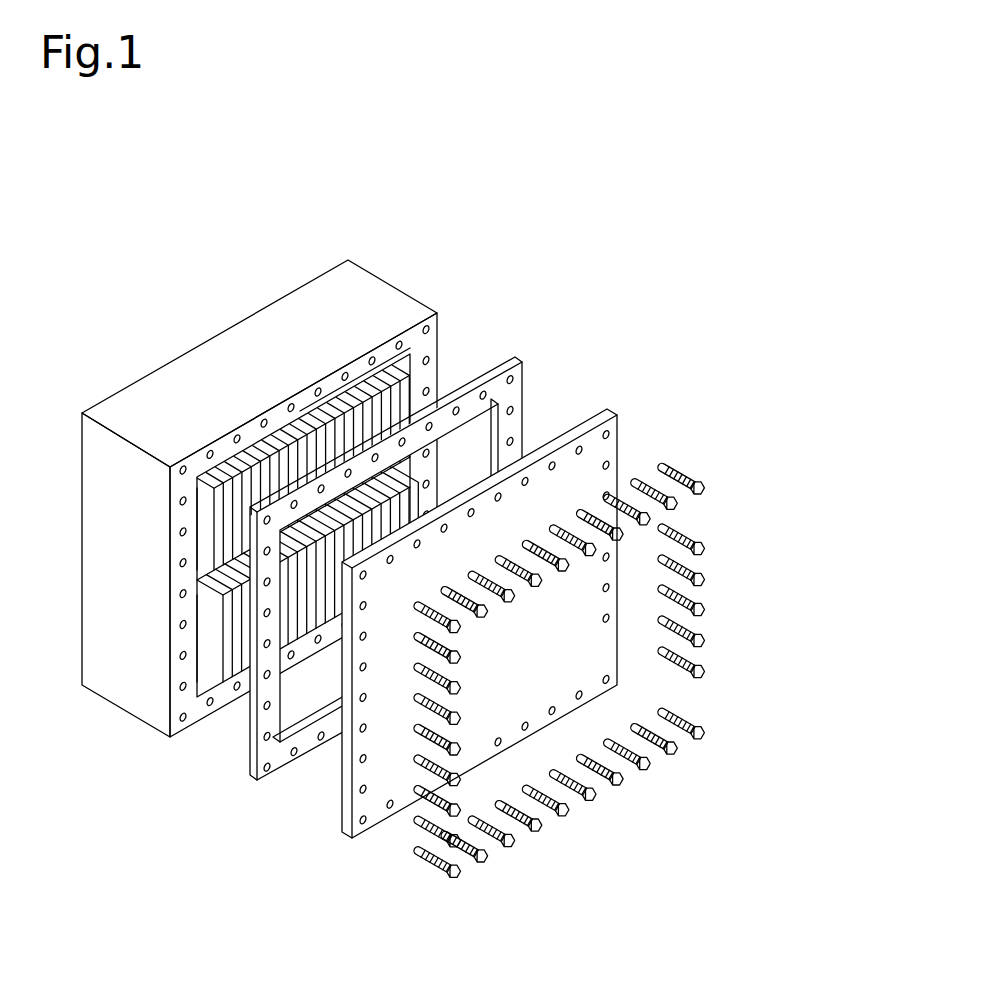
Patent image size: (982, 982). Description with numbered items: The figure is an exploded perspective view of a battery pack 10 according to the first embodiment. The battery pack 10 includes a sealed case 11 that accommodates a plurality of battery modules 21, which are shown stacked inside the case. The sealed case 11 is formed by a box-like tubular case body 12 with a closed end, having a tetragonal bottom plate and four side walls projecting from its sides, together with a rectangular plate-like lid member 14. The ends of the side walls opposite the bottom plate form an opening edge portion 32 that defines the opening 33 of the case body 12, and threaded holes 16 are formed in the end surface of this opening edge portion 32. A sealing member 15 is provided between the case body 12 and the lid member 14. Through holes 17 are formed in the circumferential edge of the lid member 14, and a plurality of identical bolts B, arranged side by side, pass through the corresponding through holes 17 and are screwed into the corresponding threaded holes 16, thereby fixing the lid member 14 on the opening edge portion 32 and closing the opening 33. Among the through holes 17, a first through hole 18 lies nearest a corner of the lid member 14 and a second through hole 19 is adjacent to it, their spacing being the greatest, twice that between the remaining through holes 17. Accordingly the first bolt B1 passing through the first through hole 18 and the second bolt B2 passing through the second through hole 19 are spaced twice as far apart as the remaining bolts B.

The battery pack 10 is at (732, 321).
The sealed case 11 is at (237, 857).
The case body 12 is at (123, 723).
The lid member 14 is at (340, 810).
The sealing member 15 is at (527, 370).
The threaded holes 16 is at (266, 420).
The through holes 17 is at (611, 466).
The first through hole 18 is at (604, 680).
The second through hole 19 is at (604, 621).
The battery modules 21 is at (399, 371).
The opening edge portion 32 is at (357, 372).
The opening 33 is at (206, 474).
The bolts B is at (712, 520).
The first bolt B1 is at (715, 745).
The second bolt B2 is at (712, 670).